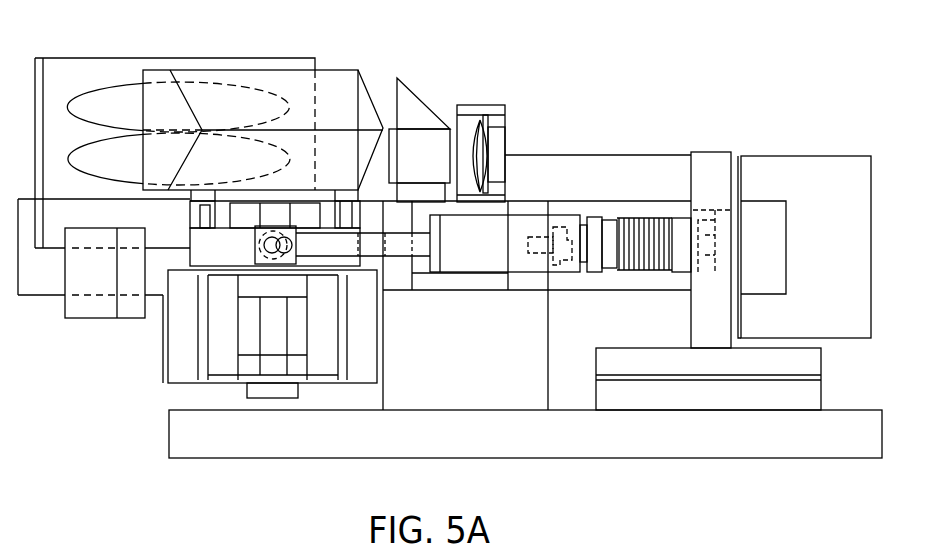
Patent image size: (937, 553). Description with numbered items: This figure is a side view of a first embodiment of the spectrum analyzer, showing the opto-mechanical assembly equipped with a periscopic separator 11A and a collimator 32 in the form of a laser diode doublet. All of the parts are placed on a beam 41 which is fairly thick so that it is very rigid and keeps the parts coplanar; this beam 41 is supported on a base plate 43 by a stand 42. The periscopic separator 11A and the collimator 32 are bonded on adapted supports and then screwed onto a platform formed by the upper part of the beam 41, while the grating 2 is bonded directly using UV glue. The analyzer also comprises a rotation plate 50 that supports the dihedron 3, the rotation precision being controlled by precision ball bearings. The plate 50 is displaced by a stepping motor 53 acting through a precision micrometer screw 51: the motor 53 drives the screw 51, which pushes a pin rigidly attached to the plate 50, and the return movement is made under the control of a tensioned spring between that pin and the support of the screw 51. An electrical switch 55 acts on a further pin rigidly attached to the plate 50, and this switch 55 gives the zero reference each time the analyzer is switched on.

The grating 2 is at (88, 58).
The dihedron 3 is at (338, 80).
The periscopic separator 11A is at (432, 100).
The collimator 32 is at (500, 127).
The beam 41 is at (592, 200).
The stand 42 is at (538, 367).
The base plate 43 is at (748, 437).
The rotation plate 50 is at (360, 217).
The micrometer screw 51 is at (528, 275).
The stepping motor 53 is at (642, 215).
The electrical switch 55 is at (100, 322).